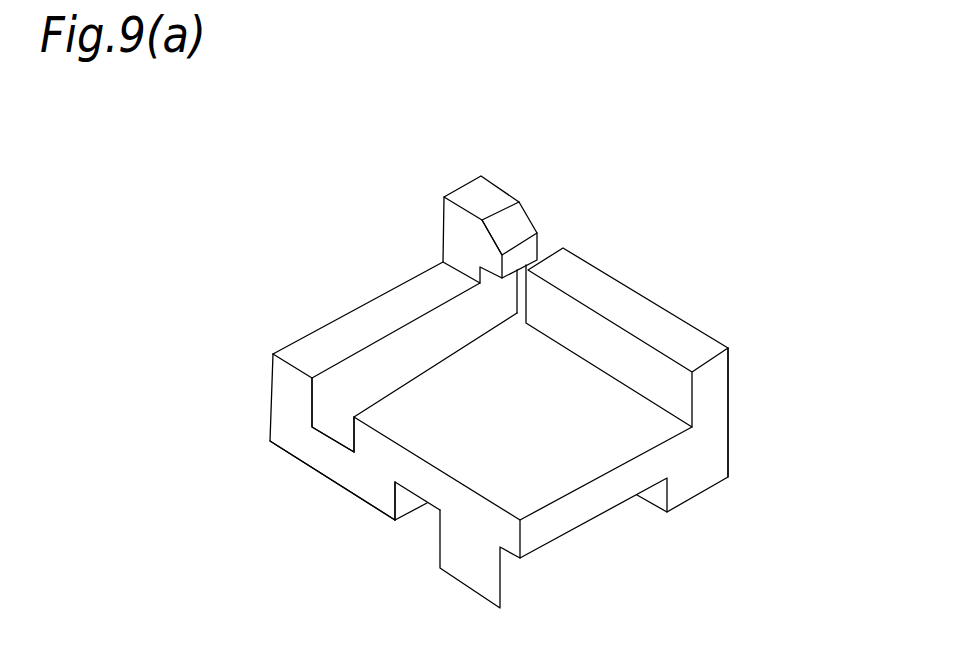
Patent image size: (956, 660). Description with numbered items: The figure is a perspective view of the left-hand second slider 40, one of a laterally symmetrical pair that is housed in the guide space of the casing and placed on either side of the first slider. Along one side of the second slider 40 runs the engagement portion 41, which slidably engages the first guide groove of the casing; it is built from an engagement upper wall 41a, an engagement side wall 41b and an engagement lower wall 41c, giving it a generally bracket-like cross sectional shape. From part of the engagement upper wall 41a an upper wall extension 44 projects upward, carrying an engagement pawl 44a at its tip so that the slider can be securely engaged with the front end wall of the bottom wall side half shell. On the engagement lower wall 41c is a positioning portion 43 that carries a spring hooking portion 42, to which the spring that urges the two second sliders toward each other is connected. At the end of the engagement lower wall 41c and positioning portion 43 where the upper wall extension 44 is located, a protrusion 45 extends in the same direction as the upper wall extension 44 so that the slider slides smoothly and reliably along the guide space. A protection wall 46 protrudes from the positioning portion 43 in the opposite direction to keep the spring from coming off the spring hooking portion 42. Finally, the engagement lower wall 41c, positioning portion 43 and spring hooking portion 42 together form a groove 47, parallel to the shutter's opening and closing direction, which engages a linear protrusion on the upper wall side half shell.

The second slider 40 is at (636, 213).
The engagement portion 41 is at (145, 378).
The engagement upper wall 41a is at (307, 355).
The engagement side wall 41b is at (323, 450).
The engagement lower wall 41c is at (375, 468).
The spring hooking portion 42 is at (472, 565).
The positioning portion 43 is at (419, 482).
The upper wall extension 44 is at (452, 228).
The engagement pawl 44a is at (521, 236).
The protrusion 45 is at (656, 326).
The protection wall 46 is at (688, 478).
The groove 47 is at (418, 525).